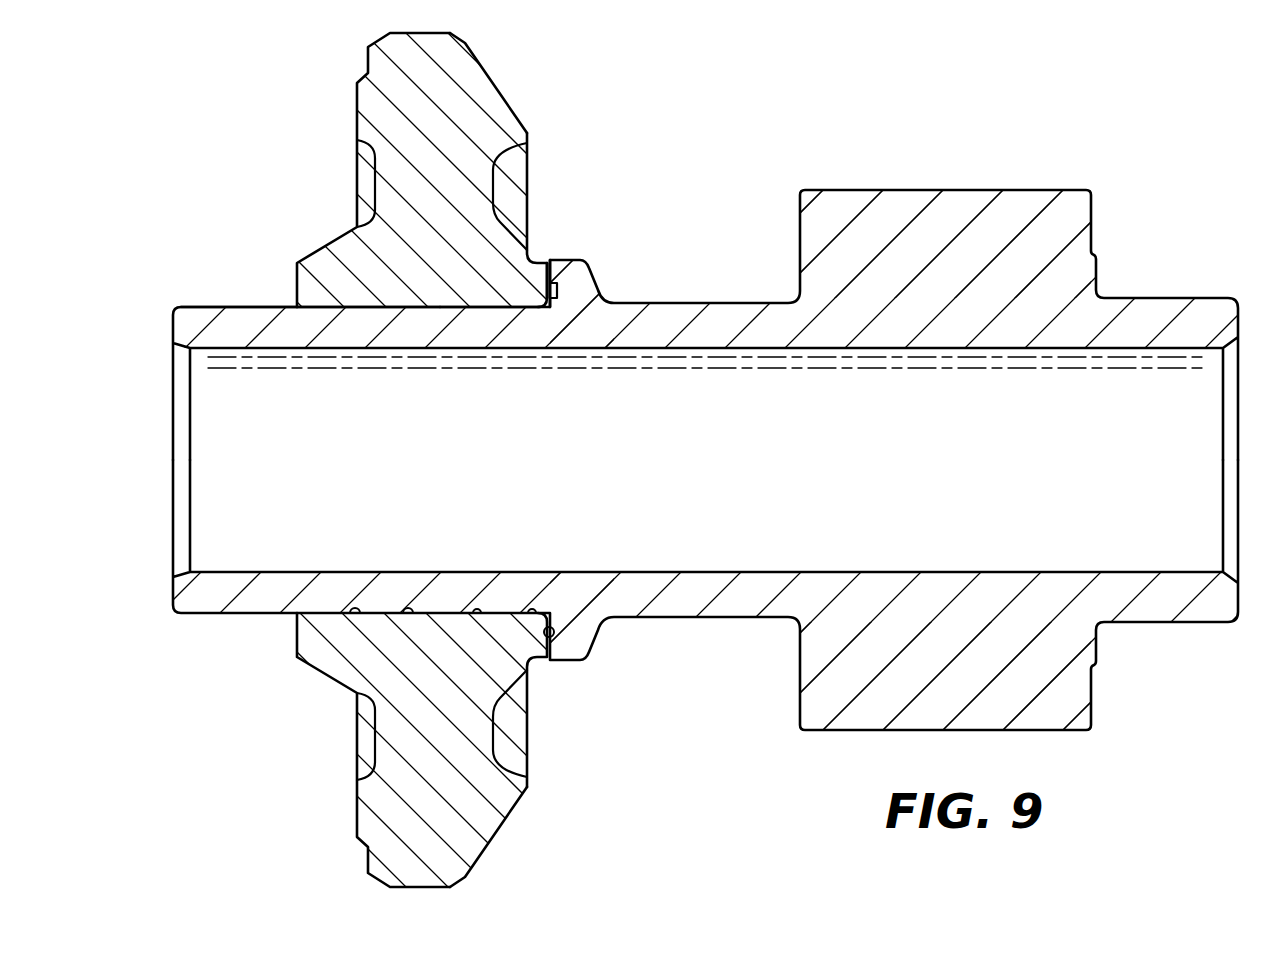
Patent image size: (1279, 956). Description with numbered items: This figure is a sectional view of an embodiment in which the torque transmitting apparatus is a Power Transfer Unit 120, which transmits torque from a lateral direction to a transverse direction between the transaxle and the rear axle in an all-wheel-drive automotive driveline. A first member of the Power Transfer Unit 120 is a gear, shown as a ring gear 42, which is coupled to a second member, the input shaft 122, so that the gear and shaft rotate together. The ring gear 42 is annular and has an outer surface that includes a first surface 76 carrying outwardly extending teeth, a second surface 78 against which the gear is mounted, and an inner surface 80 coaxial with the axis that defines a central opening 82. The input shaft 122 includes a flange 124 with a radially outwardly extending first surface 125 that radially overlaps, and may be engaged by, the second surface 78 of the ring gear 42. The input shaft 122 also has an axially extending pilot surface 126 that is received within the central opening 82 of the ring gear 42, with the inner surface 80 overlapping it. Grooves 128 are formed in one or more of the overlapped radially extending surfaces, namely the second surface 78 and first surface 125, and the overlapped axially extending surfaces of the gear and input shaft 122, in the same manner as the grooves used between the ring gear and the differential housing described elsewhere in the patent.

The Power Transfer Unit 120 is at (1162, 113).
The input shaft 122 is at (940, 210).
The flange 124 is at (570, 278).
The first surface 125 is at (541, 262).
The second surface 78 is at (549, 290).
The first surface 76 is at (468, 48).
The ring gear 42 is at (465, 97).
The inner surface 80 is at (455, 319).
The central opening 82 is at (486, 318).
The pilot surface 126 is at (387, 305).
The grooves 128 is at (408, 610).